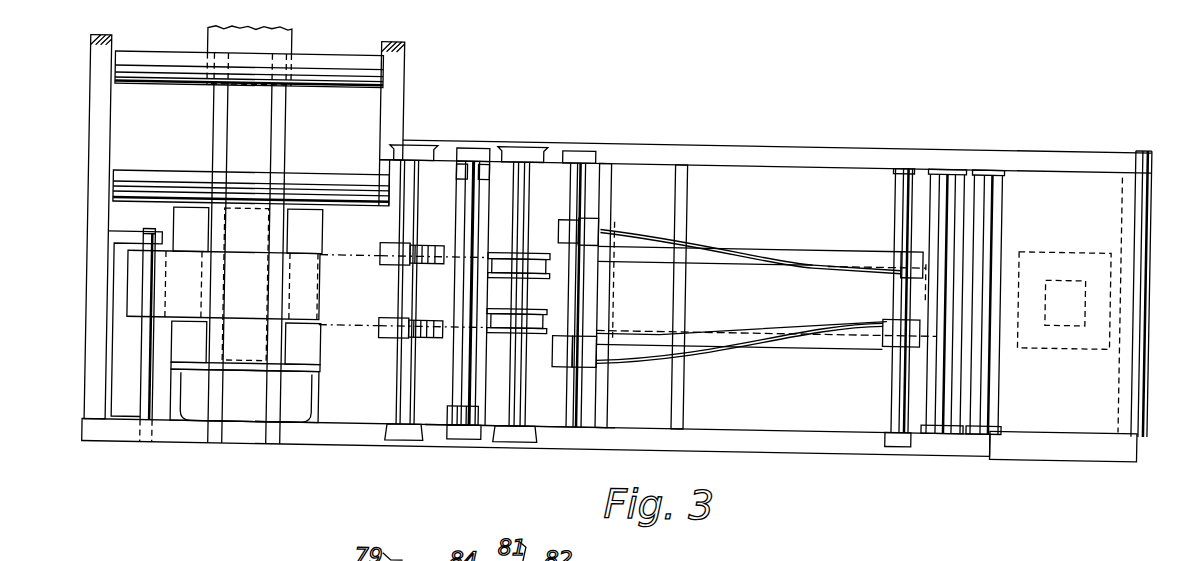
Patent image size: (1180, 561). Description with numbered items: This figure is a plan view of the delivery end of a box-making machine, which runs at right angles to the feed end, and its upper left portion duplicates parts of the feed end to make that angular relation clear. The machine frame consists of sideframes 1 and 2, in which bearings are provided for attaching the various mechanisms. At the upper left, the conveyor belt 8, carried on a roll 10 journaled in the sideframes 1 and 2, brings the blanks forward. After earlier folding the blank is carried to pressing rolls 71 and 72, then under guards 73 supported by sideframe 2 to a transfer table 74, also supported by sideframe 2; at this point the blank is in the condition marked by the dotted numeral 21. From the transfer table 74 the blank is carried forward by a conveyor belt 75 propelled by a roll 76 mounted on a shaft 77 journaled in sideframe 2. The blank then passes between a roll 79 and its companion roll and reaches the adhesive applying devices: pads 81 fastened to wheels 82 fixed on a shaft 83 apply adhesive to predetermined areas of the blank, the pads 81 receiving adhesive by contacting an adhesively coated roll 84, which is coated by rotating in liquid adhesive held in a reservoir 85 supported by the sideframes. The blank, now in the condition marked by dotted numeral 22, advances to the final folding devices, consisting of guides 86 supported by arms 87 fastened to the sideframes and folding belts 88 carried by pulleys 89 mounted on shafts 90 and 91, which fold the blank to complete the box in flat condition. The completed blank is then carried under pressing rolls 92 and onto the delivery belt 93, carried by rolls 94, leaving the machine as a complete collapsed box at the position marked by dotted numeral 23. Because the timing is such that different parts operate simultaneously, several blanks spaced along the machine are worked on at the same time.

The sideframe 1 is at (837, 142).
The sideframe 2 is at (89, 170).
The conveyor belt 8 is at (206, 38).
The roll 10 is at (307, 158).
The blank position 21 is at (245, 284).
The blank position 22 is at (601, 295).
The blank position 23 is at (1064, 301).
The pressing roll 71 is at (186, 89).
The pressing roll 72 is at (292, 55).
The guards 73 is at (221, 382).
The transfer table 74 is at (323, 398).
The conveyor belt 75 is at (367, 255).
The roll 76 is at (130, 300).
The shaft 77 is at (145, 390).
The roll 79 is at (392, 340).
The pads 81 is at (529, 262).
The wheels 82 is at (485, 338).
The shaft 83 is at (528, 372).
The adhesively coated roll 84 is at (455, 348).
The reservoir 85 is at (454, 410).
The guides 86 is at (638, 258).
The arms 87 is at (651, 398).
The folding belts 88 is at (856, 262).
The pulleys 89 is at (566, 216).
The shaft 90 is at (563, 416).
The shaft 91 is at (900, 392).
The pressing rolls 92 is at (1003, 172).
The delivery belt 93 is at (1059, 411).
The rolls 94 is at (1122, 178).